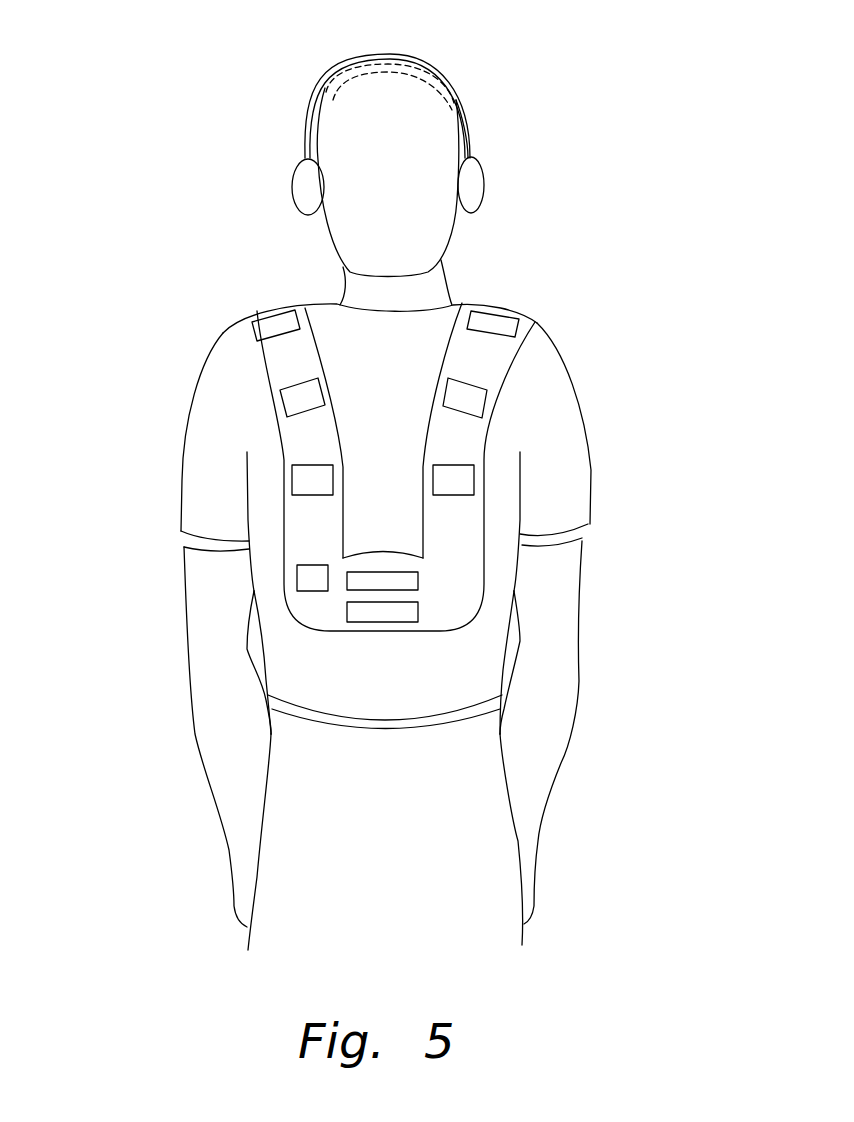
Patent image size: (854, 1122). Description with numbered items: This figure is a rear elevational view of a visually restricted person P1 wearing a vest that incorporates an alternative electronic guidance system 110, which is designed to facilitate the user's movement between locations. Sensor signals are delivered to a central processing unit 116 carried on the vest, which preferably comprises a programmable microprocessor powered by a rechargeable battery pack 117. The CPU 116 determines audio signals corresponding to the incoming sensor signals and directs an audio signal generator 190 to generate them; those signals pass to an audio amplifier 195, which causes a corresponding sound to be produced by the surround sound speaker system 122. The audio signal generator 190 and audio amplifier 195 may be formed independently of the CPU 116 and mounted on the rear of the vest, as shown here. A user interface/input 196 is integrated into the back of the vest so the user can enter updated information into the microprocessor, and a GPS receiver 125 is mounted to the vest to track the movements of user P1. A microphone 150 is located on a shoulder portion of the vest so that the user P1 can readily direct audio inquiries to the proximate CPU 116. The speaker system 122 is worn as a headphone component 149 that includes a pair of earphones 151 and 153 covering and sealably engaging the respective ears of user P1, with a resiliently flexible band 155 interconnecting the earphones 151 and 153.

The electronic guidance system 110 is at (197, 287).
The visually restricted person P1 is at (560, 345).
The central processing unit 116 is at (380, 572).
The rechargeable battery pack 117 is at (385, 622).
The surround sound speaker system 122 is at (462, 112).
The GPS receiver 125 is at (457, 480).
The headphone component 149 is at (323, 88).
The microphone 150 is at (277, 321).
The earphone 151 is at (292, 180).
The earphone 153 is at (483, 173).
The resiliently flexible band 155 is at (408, 67).
The audio signal generator 190 is at (292, 482).
The audio amplifier 195 is at (292, 402).
The user interface/input 196 is at (296, 578).